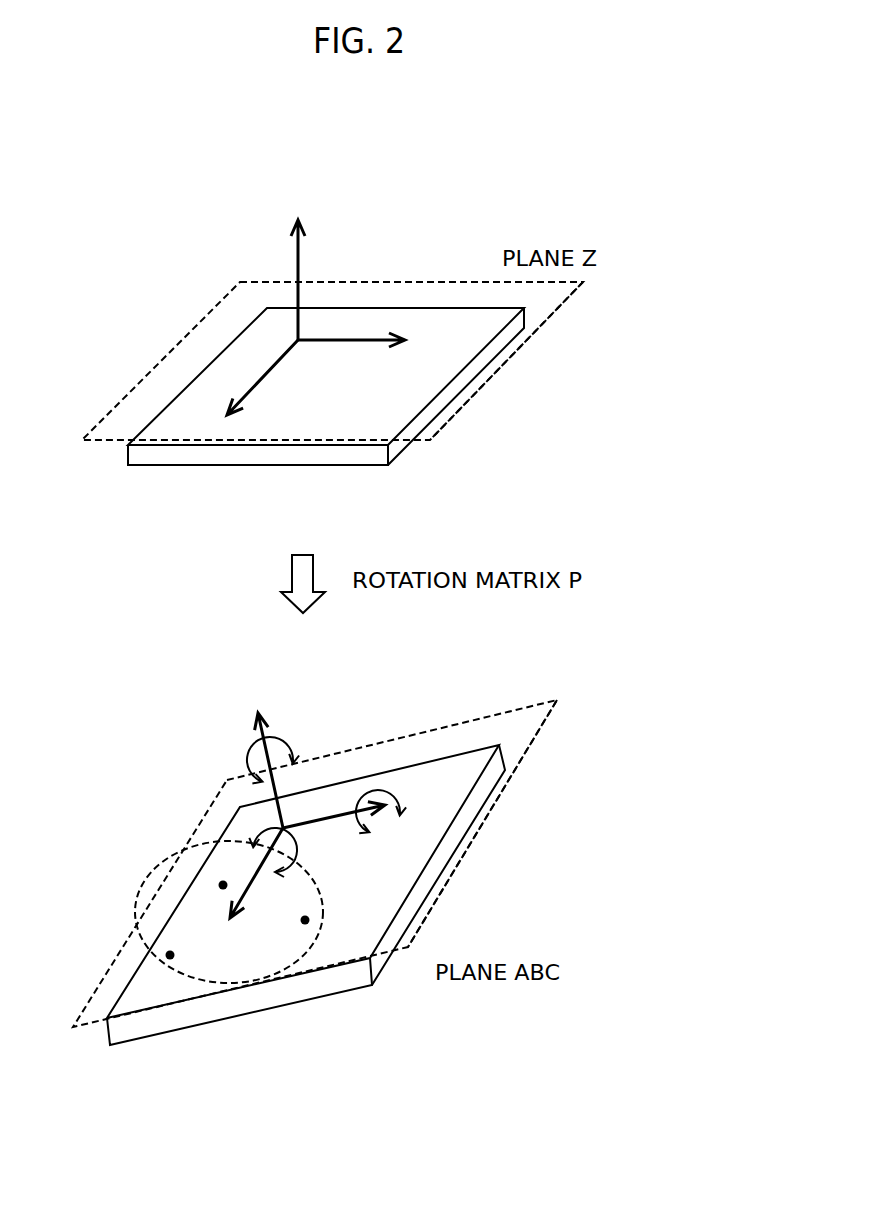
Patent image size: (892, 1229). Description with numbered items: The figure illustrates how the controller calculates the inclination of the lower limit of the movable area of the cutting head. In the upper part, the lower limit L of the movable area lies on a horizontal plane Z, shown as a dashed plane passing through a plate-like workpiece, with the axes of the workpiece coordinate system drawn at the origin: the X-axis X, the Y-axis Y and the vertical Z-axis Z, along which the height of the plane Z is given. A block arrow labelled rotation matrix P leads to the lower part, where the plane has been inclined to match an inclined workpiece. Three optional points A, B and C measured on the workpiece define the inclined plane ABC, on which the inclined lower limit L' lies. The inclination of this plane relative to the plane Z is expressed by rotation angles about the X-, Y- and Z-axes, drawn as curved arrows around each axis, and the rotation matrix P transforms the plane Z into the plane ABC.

The X-axis X is at (252, 386).
The Y-axis Y is at (371, 344).
The Z-axis Z is at (298, 265).
The lower limit of the movable area of the cutting head L is at (533, 361).
The inclined lower limit of the movable area of the cutting head L' is at (513, 823).
The point A is at (187, 959).
The point B is at (327, 919).
The point C is at (233, 873).